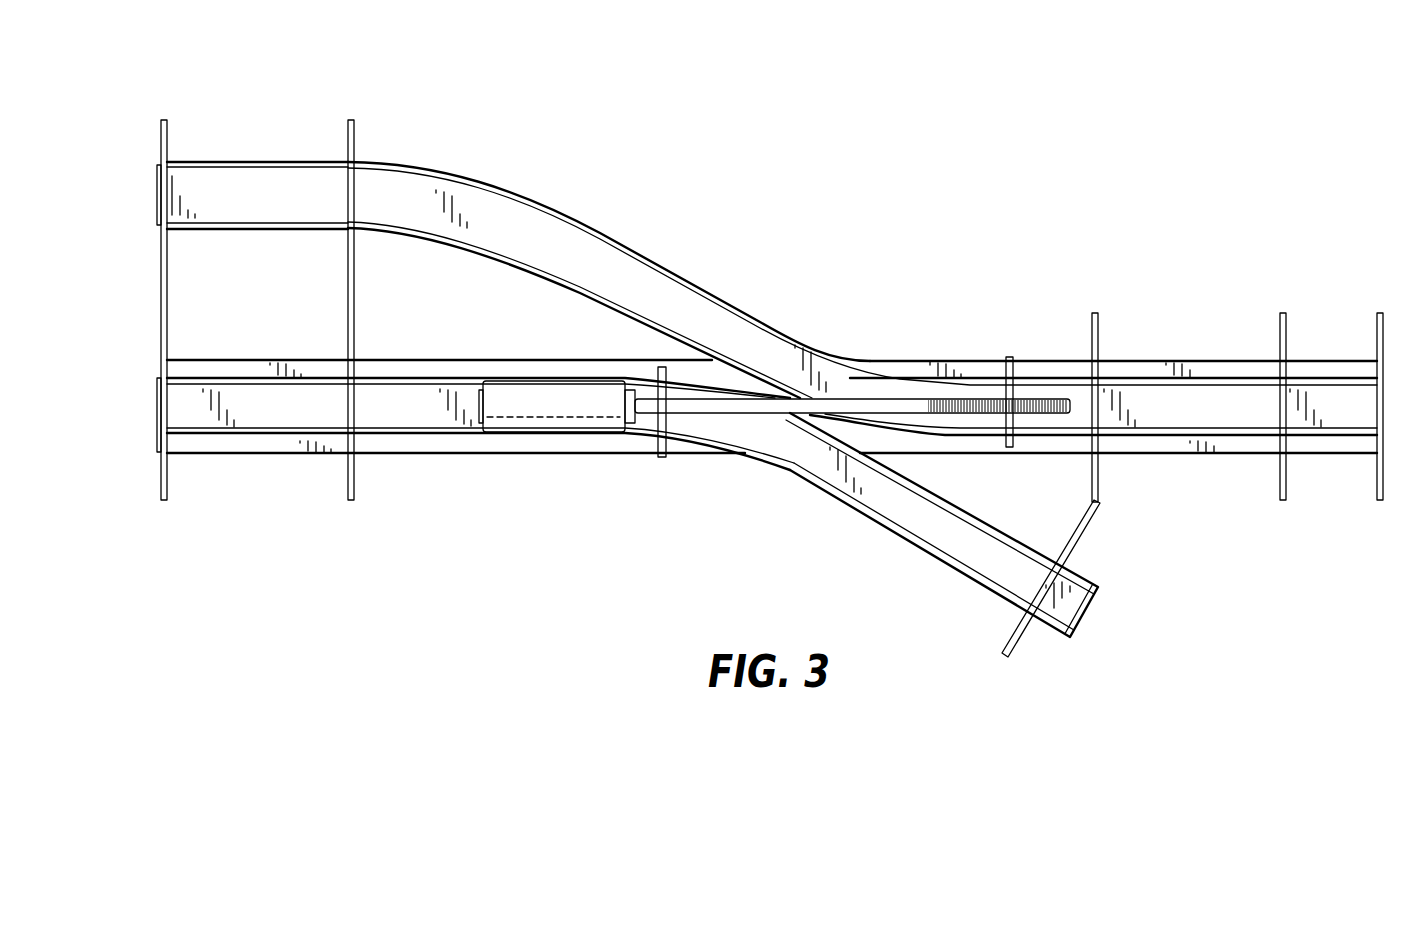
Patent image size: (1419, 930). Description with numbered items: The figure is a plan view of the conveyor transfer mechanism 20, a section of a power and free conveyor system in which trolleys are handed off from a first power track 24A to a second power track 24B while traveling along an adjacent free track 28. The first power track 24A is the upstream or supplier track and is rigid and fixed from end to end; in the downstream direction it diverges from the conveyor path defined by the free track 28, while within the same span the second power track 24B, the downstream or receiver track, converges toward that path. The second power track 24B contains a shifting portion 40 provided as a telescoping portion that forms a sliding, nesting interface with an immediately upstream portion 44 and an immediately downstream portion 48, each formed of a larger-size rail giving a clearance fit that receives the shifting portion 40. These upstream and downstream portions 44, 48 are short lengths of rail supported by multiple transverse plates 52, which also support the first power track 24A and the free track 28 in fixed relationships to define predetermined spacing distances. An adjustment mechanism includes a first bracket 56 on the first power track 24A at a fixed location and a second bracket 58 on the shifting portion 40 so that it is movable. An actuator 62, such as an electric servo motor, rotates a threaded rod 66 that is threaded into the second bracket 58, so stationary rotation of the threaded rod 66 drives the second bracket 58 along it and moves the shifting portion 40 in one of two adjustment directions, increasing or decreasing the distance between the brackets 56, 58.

The transfer mechanism 20 is at (960, 108).
The upstream portion 44 is at (276, 196).
The shifting portion 40 is at (583, 251).
The second power track 24B is at (722, 300).
The free track 28 is at (240, 456).
The first power track 24A is at (408, 415).
The downstream portion 48 is at (1188, 392).
The transverse plates 52 is at (167, 128).
The first bracket 56 is at (657, 422).
The second bracket 58 is at (1004, 372).
The actuator 62 is at (549, 406).
The threaded rod 66 is at (740, 407).